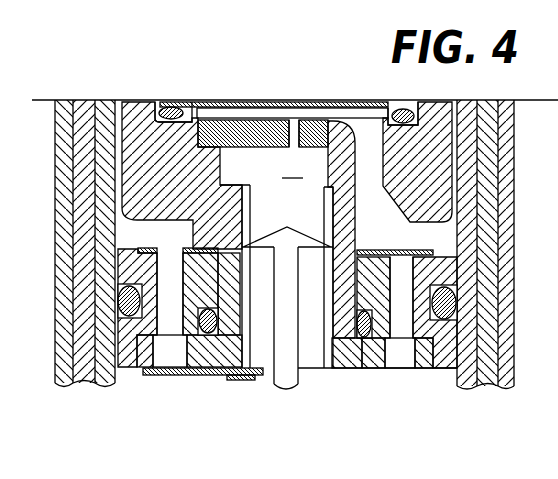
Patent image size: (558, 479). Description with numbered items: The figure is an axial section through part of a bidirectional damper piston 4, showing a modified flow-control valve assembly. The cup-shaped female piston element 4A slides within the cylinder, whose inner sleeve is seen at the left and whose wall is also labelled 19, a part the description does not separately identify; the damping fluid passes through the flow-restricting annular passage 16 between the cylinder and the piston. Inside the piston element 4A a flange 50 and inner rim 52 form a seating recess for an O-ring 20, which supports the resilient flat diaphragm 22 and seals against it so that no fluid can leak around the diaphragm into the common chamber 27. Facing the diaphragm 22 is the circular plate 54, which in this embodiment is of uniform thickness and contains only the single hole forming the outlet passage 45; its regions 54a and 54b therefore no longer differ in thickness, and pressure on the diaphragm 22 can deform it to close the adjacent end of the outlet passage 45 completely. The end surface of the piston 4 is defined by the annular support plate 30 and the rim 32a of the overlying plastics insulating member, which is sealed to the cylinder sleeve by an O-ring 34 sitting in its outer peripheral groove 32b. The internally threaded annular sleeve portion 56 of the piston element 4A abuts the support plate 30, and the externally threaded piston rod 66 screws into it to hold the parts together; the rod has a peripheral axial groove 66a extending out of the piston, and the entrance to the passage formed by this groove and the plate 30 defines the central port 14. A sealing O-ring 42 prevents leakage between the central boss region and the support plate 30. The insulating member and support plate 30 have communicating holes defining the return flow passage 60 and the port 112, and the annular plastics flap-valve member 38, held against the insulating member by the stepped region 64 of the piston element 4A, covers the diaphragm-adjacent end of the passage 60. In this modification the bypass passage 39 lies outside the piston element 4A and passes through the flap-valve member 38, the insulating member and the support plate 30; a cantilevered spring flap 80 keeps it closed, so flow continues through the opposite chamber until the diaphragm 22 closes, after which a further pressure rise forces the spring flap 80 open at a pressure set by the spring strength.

The annular passage 16 is at (101, 100).
The tubing wall 19 is at (507, 244).
The female piston element 4A is at (434, 171).
The flange 50 is at (150, 122).
The inner rim 52 is at (186, 110).
The diaphragm 22 is at (337, 102).
The common chamber 27 is at (233, 117).
The O-ring 20 is at (401, 112).
The thinner semicircular region 54b is at (234, 147).
The outlet passage 45 is at (290, 127).
The circular plate 54 is at (261, 148).
The thicker semi-circular region 54a is at (300, 148).
The peripheral axial groove 66a is at (290, 335).
The piston rod 66 is at (309, 358).
The central port 14 is at (282, 382).
The stepped region 64 is at (208, 236).
The flap-valve member 38 is at (386, 250).
The rim 32a is at (124, 357).
The outer peripheral groove 32b is at (128, 318).
The cantilevered spring flap 80 is at (148, 368).
The bypass passage 39 is at (167, 355).
The annular sleeve portion 56 is at (233, 327).
The annular support plate 30 is at (207, 370).
The O-ring 34 is at (455, 306).
The sealing O-ring 42 is at (362, 338).
The return passage 60 is at (403, 327).
The port 112 is at (423, 353).
The piston 4 is at (364, 425).